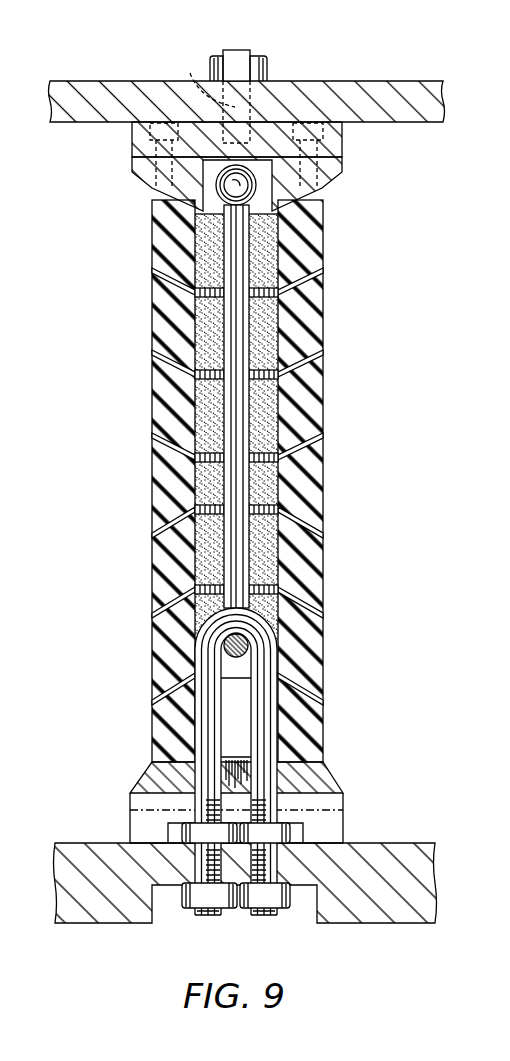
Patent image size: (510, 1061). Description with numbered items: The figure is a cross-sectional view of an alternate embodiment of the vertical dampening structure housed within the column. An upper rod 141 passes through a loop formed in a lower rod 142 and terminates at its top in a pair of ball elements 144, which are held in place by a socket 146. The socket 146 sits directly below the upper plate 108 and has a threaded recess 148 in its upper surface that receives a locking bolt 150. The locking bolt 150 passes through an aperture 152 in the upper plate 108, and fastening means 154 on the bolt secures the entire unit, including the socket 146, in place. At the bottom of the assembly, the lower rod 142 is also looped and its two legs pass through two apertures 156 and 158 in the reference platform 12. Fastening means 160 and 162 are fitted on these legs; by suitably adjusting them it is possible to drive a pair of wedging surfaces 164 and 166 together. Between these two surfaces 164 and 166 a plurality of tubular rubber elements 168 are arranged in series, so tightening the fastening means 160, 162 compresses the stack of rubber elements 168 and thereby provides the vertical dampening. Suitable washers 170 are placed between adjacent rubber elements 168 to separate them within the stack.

The reference platform 12 is at (402, 848).
The upper plate 108 is at (395, 90).
The upper rod 141 is at (230, 387).
The lower rod 142 is at (278, 660).
The ball elements 144 is at (214, 191).
The socket 146 is at (336, 184).
The threaded recess 148 is at (244, 132).
The locking bolt 150 is at (244, 50).
The aperture 152 is at (200, 75).
The fastening means 154 is at (267, 62).
The aperture 156 is at (199, 866).
The aperture 158 is at (283, 865).
The fastening means 160 is at (180, 832).
The fastening means 162 is at (283, 837).
The wedging surface 164 is at (328, 786).
The wedging surface 166 is at (140, 178).
The tubular rubber elements 168 is at (318, 663).
The washers 170 is at (323, 433).